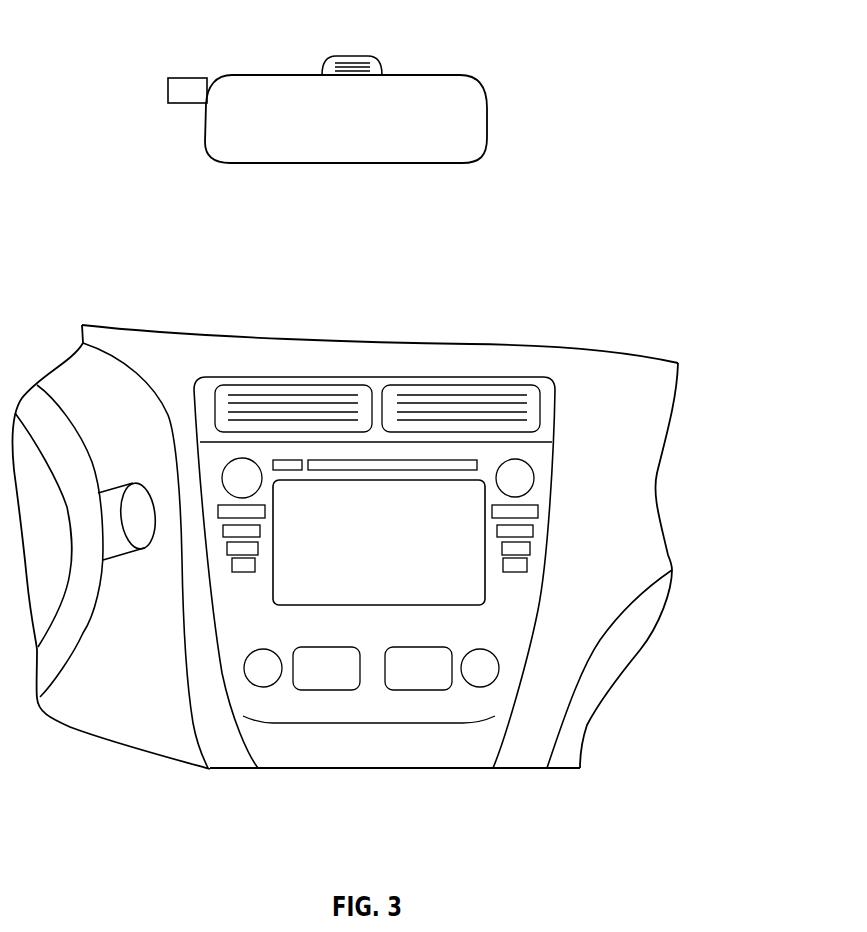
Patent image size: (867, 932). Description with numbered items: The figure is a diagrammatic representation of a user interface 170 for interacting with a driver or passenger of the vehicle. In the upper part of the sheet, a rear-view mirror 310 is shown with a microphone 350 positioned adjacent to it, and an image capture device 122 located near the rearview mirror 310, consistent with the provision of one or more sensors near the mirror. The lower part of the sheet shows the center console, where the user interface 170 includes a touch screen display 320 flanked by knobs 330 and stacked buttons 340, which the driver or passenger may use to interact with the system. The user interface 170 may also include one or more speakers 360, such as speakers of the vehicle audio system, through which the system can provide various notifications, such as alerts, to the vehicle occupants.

The user interface 170 is at (684, 77).
The image capture device 122 is at (188, 103).
The rear-view mirror 310 is at (487, 125).
The microphone 350 is at (382, 66).
The touch screen display 320 is at (358, 503).
The knobs 330 is at (533, 475).
The buttons 340 is at (538, 512).
The speakers 360 is at (500, 667).